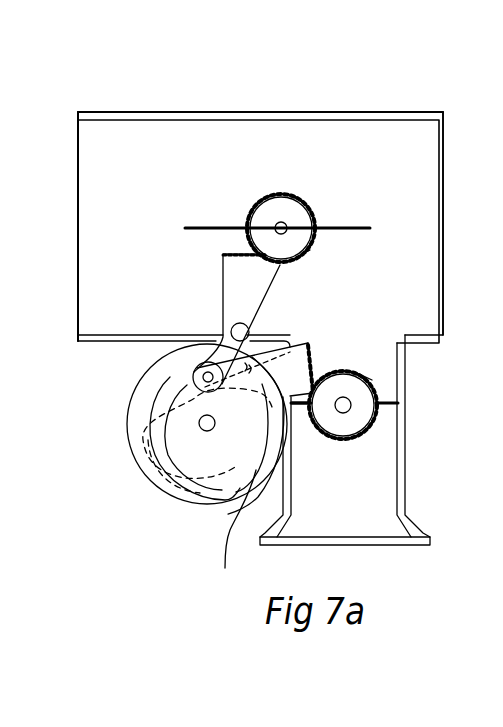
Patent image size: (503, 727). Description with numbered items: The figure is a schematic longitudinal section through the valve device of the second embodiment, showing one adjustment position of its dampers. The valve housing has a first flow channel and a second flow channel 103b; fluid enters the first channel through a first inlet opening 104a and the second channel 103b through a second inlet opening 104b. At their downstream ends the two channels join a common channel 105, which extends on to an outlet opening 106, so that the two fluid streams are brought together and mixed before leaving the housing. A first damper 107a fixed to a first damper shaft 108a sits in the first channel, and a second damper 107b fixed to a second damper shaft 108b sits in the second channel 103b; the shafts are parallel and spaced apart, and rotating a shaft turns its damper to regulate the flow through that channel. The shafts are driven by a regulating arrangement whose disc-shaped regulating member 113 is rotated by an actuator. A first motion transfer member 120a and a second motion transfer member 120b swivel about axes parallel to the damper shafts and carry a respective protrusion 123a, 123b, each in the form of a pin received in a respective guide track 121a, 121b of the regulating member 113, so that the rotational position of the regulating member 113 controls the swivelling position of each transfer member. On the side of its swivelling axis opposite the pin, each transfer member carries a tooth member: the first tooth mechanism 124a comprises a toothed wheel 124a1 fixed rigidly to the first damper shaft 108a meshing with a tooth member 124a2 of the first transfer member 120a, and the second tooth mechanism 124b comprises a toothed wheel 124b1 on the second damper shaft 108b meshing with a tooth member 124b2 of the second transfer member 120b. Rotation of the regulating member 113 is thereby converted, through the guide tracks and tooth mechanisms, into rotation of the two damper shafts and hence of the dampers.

The second inlet opening 104b is at (83, 140).
The second flow channel 103b is at (255, 140).
The common channel 105 is at (413, 142).
The outlet opening 106 is at (432, 150).
The second tooth mechanism 124b is at (231, 248).
The second damper shaft 108b is at (278, 222).
The second damper 107b is at (350, 228).
The tooth member 124b1 is at (298, 257).
The tooth member 124b2 is at (224, 254).
The second motion transfer member 120b is at (267, 297).
The protrusion 123b is at (198, 358).
The regulating member 113 is at (130, 412).
The protrusion 123a is at (205, 431).
The guide track 121a is at (147, 443).
The guide track 121b is at (220, 494).
The first motion transfer member 120a is at (252, 472).
The first tooth mechanism 124a is at (307, 426).
The tooth member 124a1 is at (360, 373).
The tooth member 124a2 is at (315, 362).
The first damper shaft 108a is at (346, 407).
The first damper 107a is at (402, 424).
The first inlet opening 104a is at (383, 546).